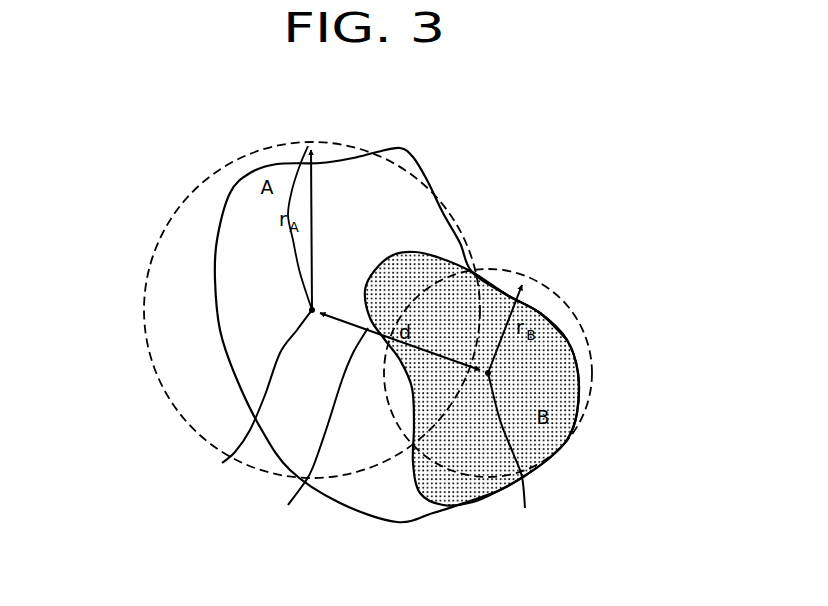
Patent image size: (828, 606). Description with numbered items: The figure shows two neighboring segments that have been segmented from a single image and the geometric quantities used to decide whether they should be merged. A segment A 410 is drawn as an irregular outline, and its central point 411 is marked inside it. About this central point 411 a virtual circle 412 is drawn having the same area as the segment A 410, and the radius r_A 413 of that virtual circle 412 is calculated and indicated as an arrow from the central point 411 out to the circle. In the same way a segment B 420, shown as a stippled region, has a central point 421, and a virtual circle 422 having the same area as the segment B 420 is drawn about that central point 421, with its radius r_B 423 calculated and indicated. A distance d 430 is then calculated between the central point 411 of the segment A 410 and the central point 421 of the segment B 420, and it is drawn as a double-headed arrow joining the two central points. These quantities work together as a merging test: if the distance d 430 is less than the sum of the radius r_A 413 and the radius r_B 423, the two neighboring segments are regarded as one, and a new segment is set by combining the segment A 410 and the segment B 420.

The segment A 410 is at (387, 200).
The central point of segment A 411 is at (253, 399).
The virtual circle 412 is at (160, 392).
The radius r_A 413 is at (319, 227).
The segment B 420 is at (475, 270).
The central point of segment B 421 is at (518, 455).
The virtual circle 422 is at (565, 303).
The radius r_B 423 is at (513, 303).
The distance d 430 is at (316, 430).